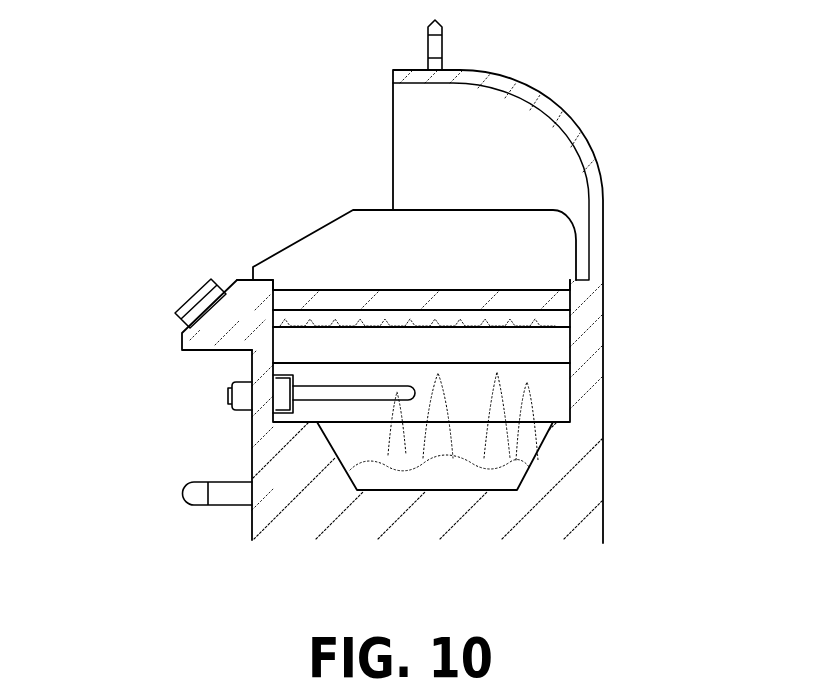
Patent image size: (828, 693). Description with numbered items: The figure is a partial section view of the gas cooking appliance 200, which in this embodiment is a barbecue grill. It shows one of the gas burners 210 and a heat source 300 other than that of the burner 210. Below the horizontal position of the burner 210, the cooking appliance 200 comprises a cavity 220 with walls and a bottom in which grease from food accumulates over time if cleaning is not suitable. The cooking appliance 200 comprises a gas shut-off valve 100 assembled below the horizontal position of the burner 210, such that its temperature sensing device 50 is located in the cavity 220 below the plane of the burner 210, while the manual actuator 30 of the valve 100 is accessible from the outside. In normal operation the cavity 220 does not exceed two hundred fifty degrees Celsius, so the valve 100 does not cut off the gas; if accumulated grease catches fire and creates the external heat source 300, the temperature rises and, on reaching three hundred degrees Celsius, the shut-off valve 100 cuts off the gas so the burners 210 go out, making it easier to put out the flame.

The gas cooking appliance 200 is at (203, 205).
The gas burner 210 is at (330, 341).
The temperature sensing device 50 is at (393, 365).
The manual actuator 30 is at (232, 395).
The gas shut-off valve 100 is at (232, 428).
The heat source 300 is at (447, 404).
The cavity 220 is at (492, 475).